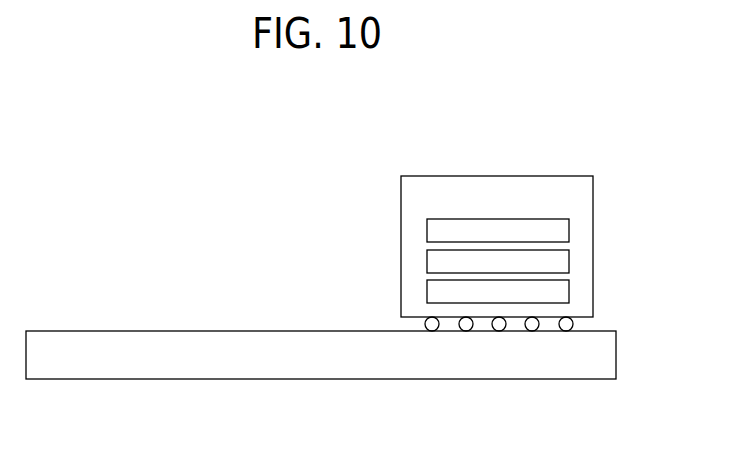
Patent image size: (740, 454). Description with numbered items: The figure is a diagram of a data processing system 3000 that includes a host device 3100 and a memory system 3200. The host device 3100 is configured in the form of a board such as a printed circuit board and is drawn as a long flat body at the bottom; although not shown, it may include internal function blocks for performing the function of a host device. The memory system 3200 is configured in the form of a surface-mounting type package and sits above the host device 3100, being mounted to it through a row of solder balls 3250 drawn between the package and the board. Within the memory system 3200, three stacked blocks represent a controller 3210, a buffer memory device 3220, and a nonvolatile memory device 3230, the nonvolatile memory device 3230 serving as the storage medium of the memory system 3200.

The data processing system 3000 is at (157, 152).
The host device 3100 is at (321, 355).
The memory system 3200 is at (497, 246).
The controller 3210 is at (498, 231).
The buffer memory device 3220 is at (498, 262).
The nonvolatile memory device 3230 is at (498, 292).
The solder balls 3250 is at (581, 323).